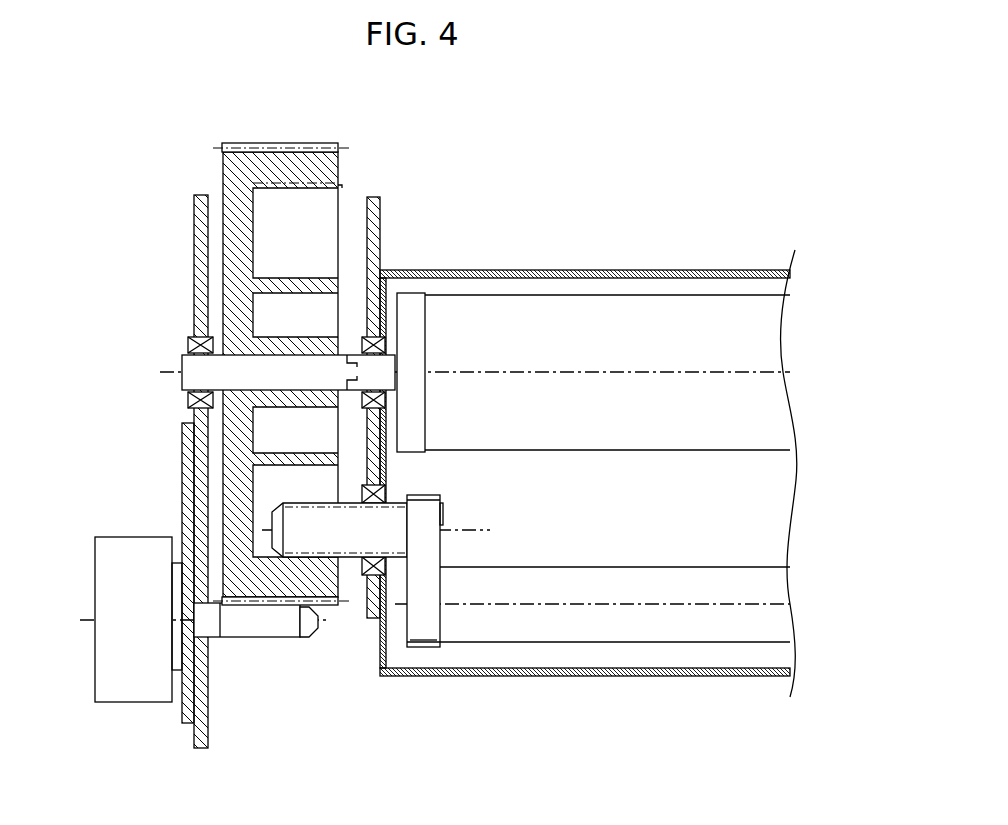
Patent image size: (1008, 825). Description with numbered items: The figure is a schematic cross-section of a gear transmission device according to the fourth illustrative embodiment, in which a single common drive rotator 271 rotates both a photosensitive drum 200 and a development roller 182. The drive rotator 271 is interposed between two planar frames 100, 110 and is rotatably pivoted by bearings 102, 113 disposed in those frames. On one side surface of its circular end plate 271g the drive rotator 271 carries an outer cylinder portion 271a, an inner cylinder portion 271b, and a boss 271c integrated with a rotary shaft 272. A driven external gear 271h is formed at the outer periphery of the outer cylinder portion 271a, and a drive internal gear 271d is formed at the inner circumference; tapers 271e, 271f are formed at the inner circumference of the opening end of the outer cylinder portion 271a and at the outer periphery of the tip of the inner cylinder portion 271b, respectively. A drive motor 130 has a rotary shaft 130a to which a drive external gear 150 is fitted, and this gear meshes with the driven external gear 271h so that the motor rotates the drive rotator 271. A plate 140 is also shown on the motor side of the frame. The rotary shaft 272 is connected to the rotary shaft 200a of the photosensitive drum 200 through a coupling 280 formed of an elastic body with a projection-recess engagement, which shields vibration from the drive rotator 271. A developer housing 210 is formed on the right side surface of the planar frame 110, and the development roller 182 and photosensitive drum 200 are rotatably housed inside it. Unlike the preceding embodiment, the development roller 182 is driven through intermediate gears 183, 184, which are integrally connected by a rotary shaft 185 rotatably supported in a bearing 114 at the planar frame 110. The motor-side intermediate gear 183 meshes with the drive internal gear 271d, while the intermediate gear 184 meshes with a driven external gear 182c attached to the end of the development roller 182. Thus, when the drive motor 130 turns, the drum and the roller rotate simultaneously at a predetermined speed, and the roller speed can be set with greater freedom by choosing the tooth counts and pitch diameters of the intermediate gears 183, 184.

The planar frame 100 is at (199, 242).
The bearing 102 is at (193, 343).
The planar frame 110 is at (381, 236).
The bearing 113 is at (385, 345).
The bearing 114 is at (385, 494).
The drive motor 130 is at (130, 537).
The rotary shaft 130a is at (213, 637).
The support plate 140 is at (188, 466).
The drive external gear 150 is at (306, 630).
The development roller 182 is at (636, 580).
The driven external gear 182c is at (420, 634).
The intermediate gear 183 is at (292, 508).
The intermediate gear 184 is at (430, 500).
The rotary shaft 185 is at (398, 543).
The photosensitive drum 200 is at (588, 465).
The rotary shaft 200a is at (403, 385).
The developer housing 210 is at (577, 270).
The drive rotator 271 is at (240, 390).
The outer cylinder portion 271a is at (338, 172).
The inner cylinder portion 271b is at (282, 278).
The boss 271c is at (283, 337).
The drive internal gear 271d is at (300, 550).
The taper 271e is at (340, 187).
The taper 271f is at (340, 286).
The circular end plate 271g is at (223, 176).
The driven external gear 271h is at (313, 145).
The rotary shaft 272 is at (186, 380).
The coupling 280 is at (357, 364).